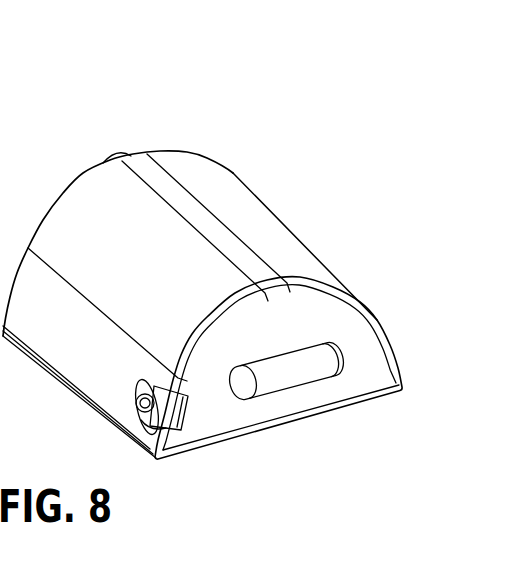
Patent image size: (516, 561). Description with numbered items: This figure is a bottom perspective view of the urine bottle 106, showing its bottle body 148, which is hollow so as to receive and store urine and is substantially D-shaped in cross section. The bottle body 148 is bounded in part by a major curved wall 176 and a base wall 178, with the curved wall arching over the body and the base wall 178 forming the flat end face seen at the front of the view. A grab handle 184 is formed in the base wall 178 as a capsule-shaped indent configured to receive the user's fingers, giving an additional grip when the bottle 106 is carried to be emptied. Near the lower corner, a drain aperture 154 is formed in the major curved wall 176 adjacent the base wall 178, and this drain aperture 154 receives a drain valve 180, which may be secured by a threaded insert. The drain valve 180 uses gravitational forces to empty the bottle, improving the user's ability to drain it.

The urine bottle 106 is at (294, 140).
The bottle body 148 is at (300, 232).
The major curved wall 176 is at (215, 186).
The base wall 178 is at (363, 379).
The grab handle 184 is at (334, 344).
The drain aperture 154 is at (170, 428).
The drain valve 180 is at (140, 402).